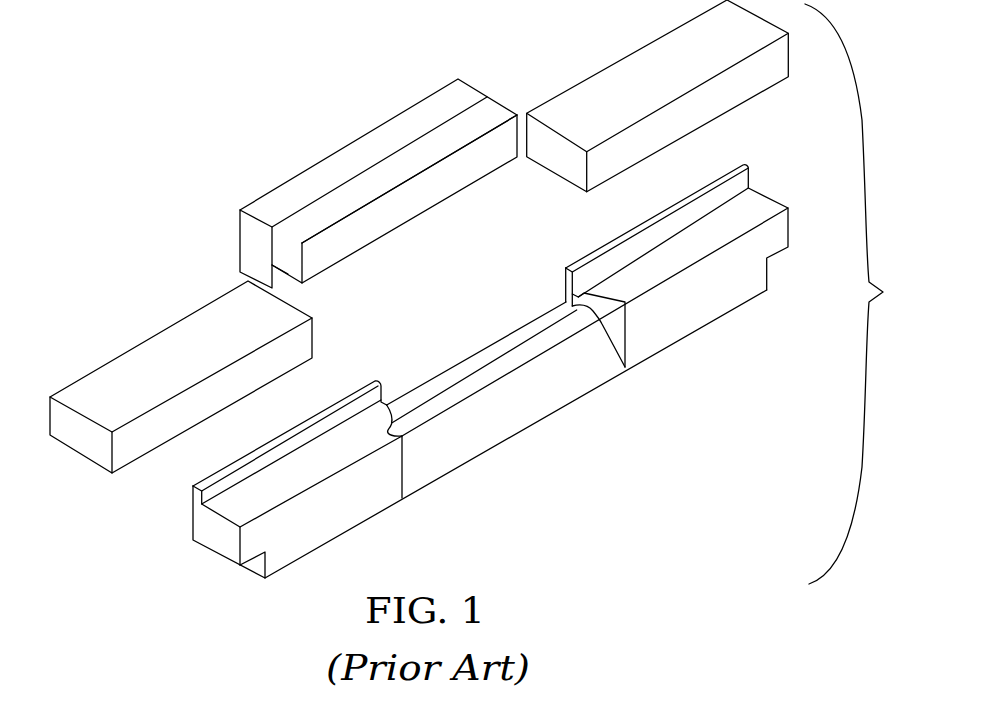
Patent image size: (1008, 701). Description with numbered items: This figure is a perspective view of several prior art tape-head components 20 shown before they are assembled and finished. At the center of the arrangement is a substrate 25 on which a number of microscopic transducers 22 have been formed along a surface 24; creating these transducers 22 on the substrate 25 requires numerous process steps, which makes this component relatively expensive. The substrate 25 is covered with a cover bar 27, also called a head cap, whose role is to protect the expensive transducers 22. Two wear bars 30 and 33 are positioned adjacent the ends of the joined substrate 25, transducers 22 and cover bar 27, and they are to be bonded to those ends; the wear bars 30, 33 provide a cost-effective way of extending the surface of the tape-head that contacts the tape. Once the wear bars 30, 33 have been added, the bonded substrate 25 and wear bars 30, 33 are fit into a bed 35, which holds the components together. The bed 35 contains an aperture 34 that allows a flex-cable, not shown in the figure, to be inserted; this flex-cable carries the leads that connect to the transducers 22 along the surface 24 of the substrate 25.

The tape-head components 20 is at (863, 294).
The transducers 22 is at (382, 160).
The surface 24 is at (277, 278).
The substrate 25 is at (313, 175).
The cover bar 27 is at (425, 197).
The wear bar 30 is at (277, 366).
The wear bar 33 is at (620, 78).
The aperture 34 is at (497, 407).
The bed 35 is at (697, 302).